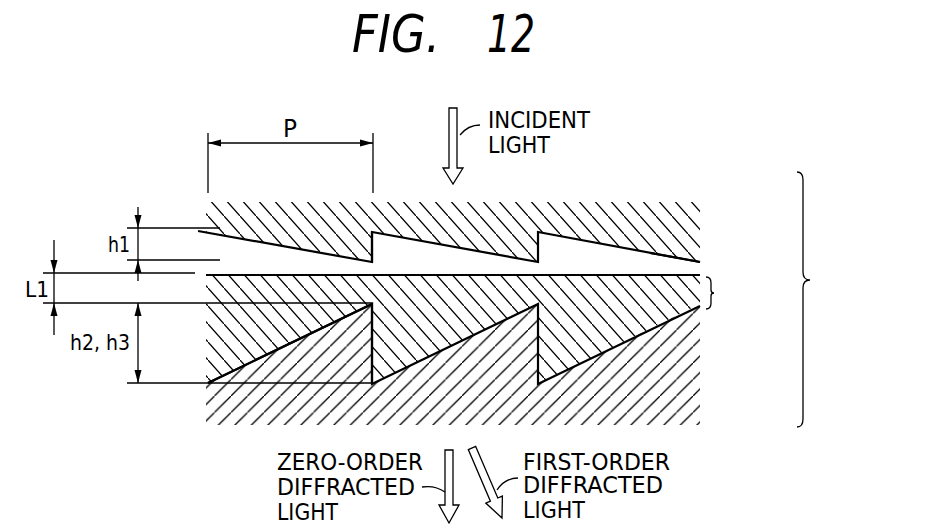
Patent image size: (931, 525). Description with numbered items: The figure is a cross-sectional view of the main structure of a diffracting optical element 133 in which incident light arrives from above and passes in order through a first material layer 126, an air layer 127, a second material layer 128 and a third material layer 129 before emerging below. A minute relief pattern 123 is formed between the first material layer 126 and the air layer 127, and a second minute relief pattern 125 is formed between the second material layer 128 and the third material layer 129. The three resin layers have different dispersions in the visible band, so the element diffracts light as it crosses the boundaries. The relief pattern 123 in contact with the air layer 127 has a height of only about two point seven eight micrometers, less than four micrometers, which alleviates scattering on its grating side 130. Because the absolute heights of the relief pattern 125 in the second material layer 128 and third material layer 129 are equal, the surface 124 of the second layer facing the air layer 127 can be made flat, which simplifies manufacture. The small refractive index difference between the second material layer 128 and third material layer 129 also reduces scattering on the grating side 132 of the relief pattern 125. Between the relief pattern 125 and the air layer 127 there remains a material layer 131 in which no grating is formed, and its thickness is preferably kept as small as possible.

The minute relief pattern 123 is at (630, 248).
The surface 124 is at (572, 275).
The minute relief pattern 125 is at (662, 328).
The first material layer 126 is at (668, 228).
The air layer 127 is at (688, 268).
The second material layer 128 is at (237, 334).
The third material layer 129 is at (673, 378).
The grating side 130 is at (375, 232).
The material layer 131 is at (730, 293).
The grating side 132 is at (365, 352).
The diffracting optical element 133 is at (824, 299).